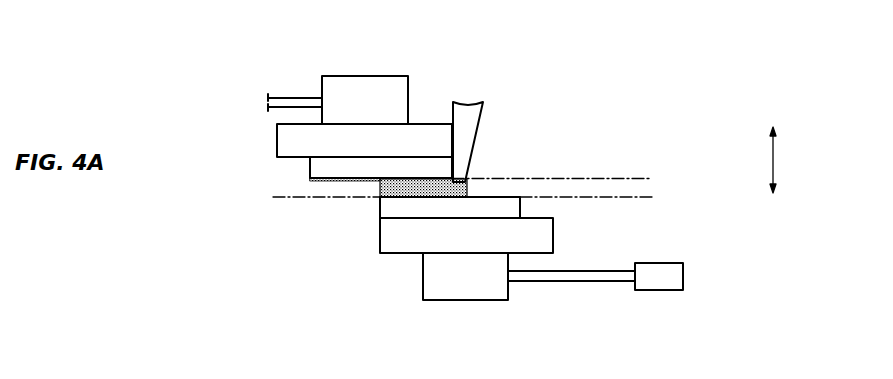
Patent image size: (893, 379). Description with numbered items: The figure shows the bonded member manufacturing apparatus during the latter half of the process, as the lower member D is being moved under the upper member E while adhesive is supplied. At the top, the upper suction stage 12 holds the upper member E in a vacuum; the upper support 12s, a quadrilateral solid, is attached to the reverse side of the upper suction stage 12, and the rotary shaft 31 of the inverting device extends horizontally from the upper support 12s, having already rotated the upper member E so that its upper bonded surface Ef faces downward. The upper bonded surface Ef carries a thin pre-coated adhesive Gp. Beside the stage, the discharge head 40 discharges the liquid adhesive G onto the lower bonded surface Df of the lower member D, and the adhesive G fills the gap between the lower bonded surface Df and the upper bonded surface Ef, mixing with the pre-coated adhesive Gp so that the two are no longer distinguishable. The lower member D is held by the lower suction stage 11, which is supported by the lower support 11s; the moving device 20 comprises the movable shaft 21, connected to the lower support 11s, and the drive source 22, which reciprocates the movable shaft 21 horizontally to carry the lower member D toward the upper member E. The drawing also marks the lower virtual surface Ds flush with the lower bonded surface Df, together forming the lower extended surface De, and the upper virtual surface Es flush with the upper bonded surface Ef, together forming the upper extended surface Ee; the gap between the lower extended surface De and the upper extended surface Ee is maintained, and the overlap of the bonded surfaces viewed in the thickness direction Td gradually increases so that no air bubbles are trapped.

The upper suction stage 12 is at (277, 128).
The upper support 12s is at (408, 92).
The rotary shaft 31 is at (289, 95).
The discharge head 40 is at (483, 112).
The upper member E is at (310, 168).
The pre-coated adhesive Gp is at (310, 179).
The adhesive G is at (472, 192).
The upper extended surface Ee is at (615, 115).
The upper bonded surface Ef is at (462, 188).
The upper virtual surface Es is at (602, 176).
The lower member D is at (522, 205).
The lower suction stage 11 is at (555, 238).
The lower support 11s is at (472, 301).
The movable shaft 21 is at (577, 283).
The drive source 22 is at (667, 292).
The moving device 20 is at (711, 304).
The thickness direction Td is at (788, 160).
The lower virtual surface Ds is at (339, 193).
The lower bonded surface Df is at (503, 197).
The lower extended surface De is at (407, 302).